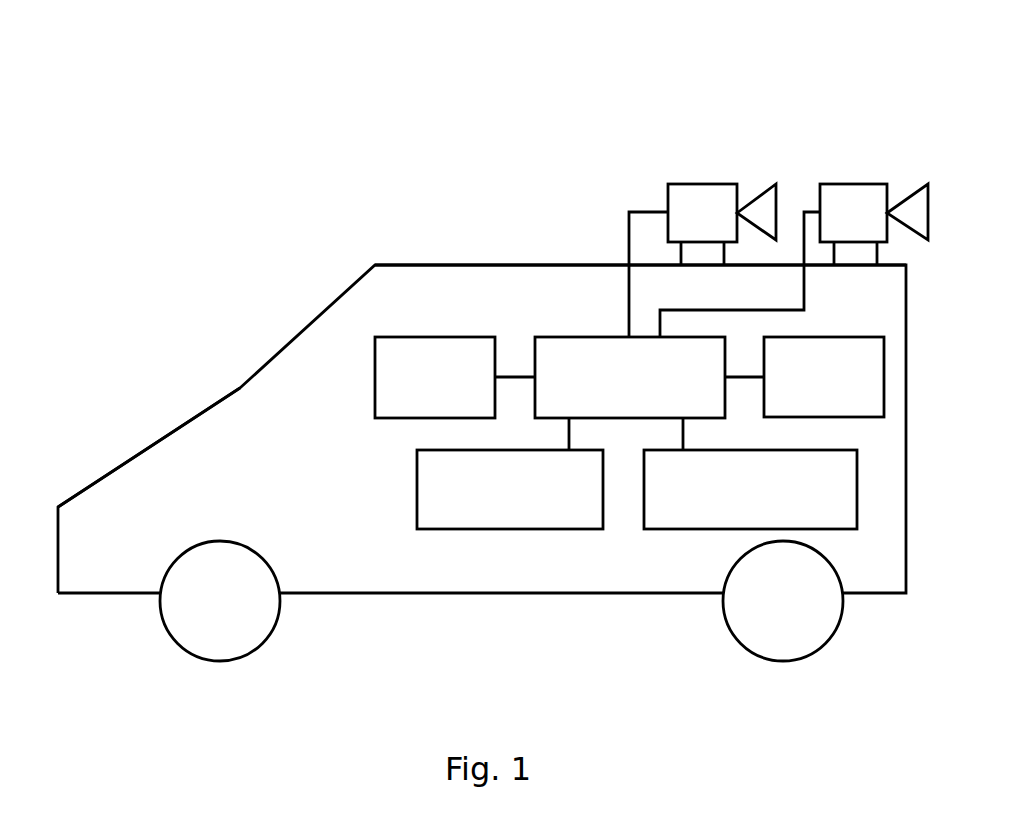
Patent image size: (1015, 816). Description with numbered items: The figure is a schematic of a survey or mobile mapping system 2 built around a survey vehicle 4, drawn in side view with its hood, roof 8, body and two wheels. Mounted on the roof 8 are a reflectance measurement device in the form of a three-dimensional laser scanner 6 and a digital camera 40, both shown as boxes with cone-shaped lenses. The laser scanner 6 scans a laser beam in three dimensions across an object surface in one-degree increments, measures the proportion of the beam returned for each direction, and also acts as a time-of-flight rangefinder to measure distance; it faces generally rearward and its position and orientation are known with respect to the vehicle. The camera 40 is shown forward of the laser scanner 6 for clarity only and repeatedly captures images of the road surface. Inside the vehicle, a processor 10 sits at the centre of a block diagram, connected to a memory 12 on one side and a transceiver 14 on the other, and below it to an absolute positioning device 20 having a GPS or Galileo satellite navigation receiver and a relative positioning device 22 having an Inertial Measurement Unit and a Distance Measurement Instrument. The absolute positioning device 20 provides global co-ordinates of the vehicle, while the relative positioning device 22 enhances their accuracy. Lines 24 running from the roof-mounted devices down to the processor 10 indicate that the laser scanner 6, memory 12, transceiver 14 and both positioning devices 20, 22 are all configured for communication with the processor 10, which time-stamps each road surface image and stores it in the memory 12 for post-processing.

The mobile mapping system 2 is at (363, 217).
The survey vehicle 4 is at (183, 425).
The 3D laser scanner 6 is at (861, 184).
The roof 8 is at (467, 265).
The processor 10 is at (562, 337).
The memory 12 is at (375, 394).
The transceiver 14 is at (884, 377).
The absolute positioning device 20 is at (472, 529).
The relative positioning device 22 is at (665, 529).
The dotted lines 24 is at (805, 284).
The digital camera 40 is at (693, 184).